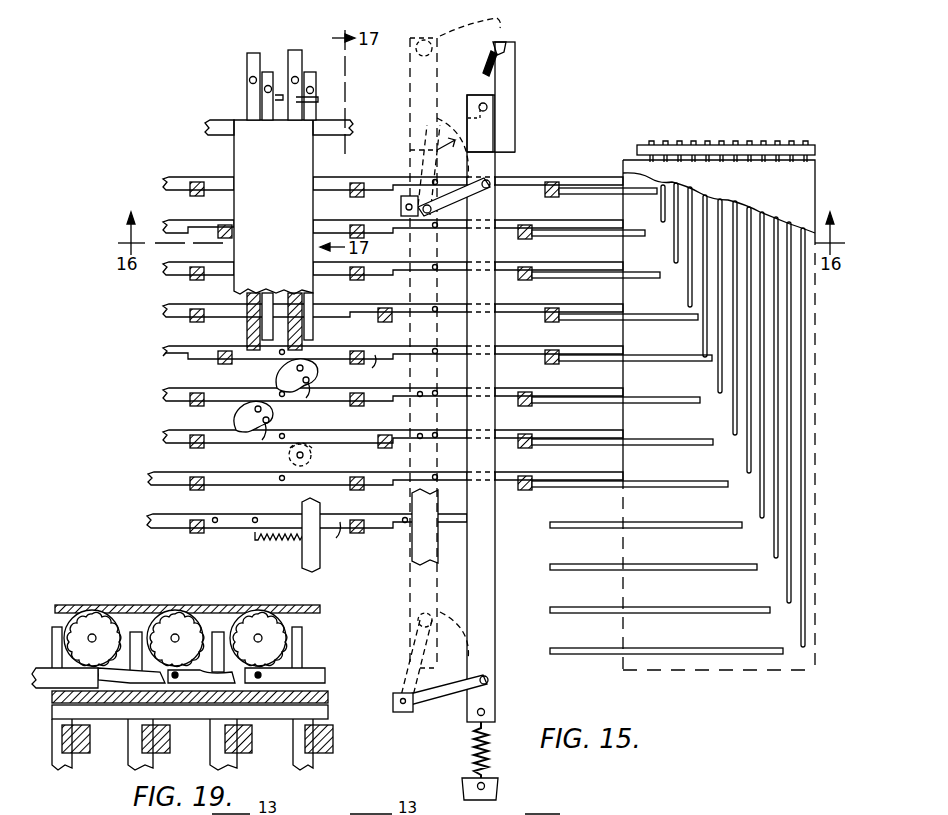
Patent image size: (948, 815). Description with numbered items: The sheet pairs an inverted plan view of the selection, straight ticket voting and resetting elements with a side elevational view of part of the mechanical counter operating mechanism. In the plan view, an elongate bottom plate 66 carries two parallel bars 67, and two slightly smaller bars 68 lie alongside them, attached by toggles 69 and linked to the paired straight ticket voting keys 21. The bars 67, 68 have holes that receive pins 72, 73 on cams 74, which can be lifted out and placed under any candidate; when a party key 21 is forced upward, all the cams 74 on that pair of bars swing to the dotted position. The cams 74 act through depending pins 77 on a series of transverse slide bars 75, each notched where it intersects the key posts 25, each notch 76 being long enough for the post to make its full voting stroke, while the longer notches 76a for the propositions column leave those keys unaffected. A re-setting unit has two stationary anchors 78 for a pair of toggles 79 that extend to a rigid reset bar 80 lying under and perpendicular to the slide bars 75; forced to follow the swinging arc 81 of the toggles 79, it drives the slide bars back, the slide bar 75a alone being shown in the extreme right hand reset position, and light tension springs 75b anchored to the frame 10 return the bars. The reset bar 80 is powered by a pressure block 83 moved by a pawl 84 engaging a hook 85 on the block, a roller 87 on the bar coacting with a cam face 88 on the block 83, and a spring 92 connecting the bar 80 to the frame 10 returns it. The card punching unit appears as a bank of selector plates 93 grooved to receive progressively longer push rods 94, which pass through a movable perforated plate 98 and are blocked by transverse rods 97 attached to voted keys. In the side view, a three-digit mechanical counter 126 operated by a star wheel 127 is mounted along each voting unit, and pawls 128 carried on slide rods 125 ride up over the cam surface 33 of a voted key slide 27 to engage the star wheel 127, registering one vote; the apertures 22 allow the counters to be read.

In FIG. 15, the frame 10 is at (198, 120).
In FIG. 15, the paired voting keys 21 is at (318, 92).
In FIG. 19, the apertures 22 is at (165, 606).
In FIG. 15, the key posts 25 is at (203, 190).
In FIG. 19, the key posts 25 is at (130, 752).
In FIG. 19, the key slide 27 is at (135, 638).
In FIG. 19, the cam surface 33 is at (134, 705).
In FIG. 15, the elongate bottom plate 66 is at (282, 189).
In FIG. 15, the parallel bars 67 is at (247, 60).
In FIG. 15, the smaller bars 68 is at (262, 120).
In FIG. 15, the toggles 69 is at (268, 72).
In FIG. 15, the pins 72 is at (306, 362).
In FIG. 15, the pins 73 is at (312, 386).
In FIG. 15, the cams 74 is at (296, 404).
In FIG. 15, the transverse slide bars 75 is at (185, 180).
In FIG. 19, the transverse slide bars 75 is at (92, 740).
In FIG. 15, the slide bar 75a is at (237, 518).
In FIG. 15, the light tension springs 75b is at (278, 540).
In FIG. 15, the notch 76 is at (378, 362).
In FIG. 15, the notches 76a is at (532, 348).
In FIG. 15, the depending pins 77 is at (243, 358).
In FIG. 15, the stationary anchors 78 is at (403, 203).
In FIG. 15, the toggles 79 is at (468, 202).
In FIG. 15, the reset bar 80 is at (410, 540).
In FIG. 15, the swinging arc 81 is at (462, 165).
In FIG. 15, the pressure block 83 is at (512, 120).
In FIG. 15, the pawl 84 is at (486, 70).
In FIG. 15, the hook 85 is at (499, 39).
In FIG. 15, the roller 87 is at (480, 98).
In FIG. 15, the cam face 88 is at (462, 20).
In FIG. 15, the spring 92 is at (474, 748).
In FIG. 15, the selector plates 93 is at (818, 208).
In FIG. 15, the push rods 94 is at (770, 216).
In FIG. 15, the transverse rods 97 is at (608, 190).
In FIG. 15, the movable perforated plate 98 is at (684, 142).
In FIG. 19, the slide rods 125 is at (28, 680).
In FIG. 19, the three digit mechanical counter 126 is at (100, 612).
In FIG. 19, the star wheel 127 is at (52, 627).
In FIG. 19, the pawls 128 is at (300, 660).